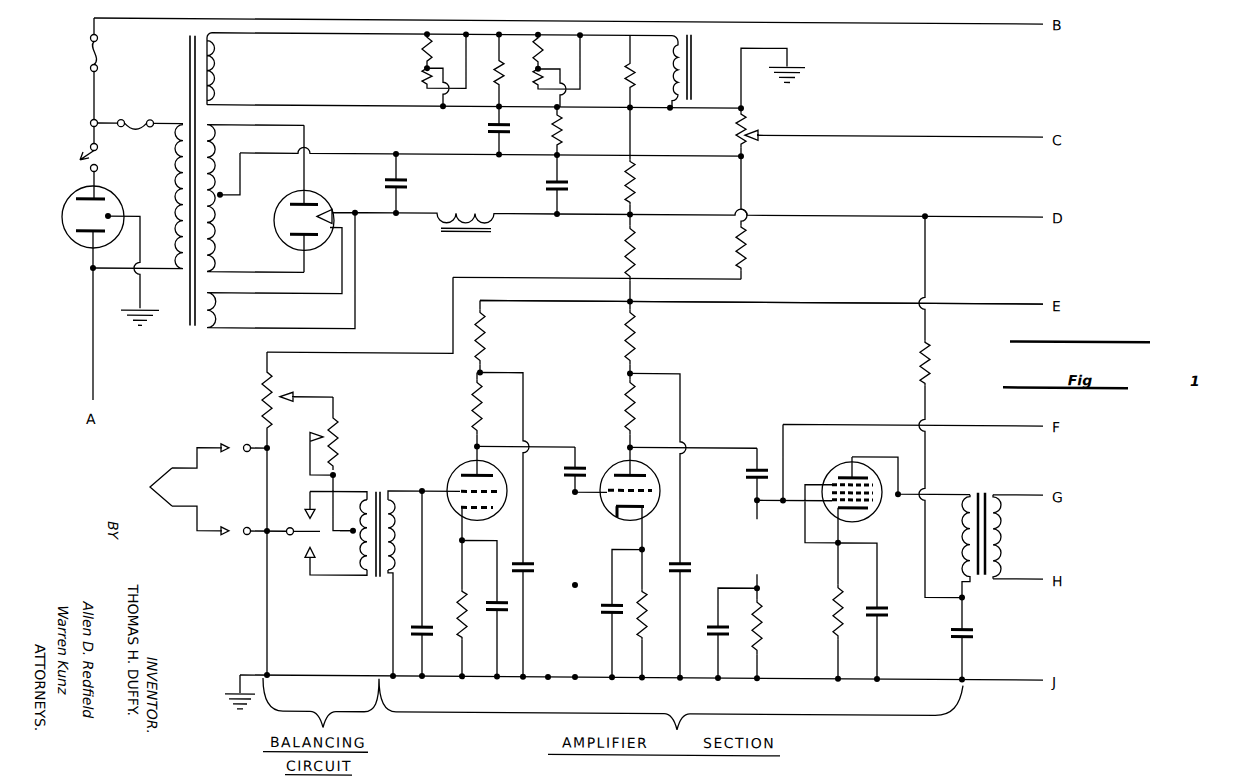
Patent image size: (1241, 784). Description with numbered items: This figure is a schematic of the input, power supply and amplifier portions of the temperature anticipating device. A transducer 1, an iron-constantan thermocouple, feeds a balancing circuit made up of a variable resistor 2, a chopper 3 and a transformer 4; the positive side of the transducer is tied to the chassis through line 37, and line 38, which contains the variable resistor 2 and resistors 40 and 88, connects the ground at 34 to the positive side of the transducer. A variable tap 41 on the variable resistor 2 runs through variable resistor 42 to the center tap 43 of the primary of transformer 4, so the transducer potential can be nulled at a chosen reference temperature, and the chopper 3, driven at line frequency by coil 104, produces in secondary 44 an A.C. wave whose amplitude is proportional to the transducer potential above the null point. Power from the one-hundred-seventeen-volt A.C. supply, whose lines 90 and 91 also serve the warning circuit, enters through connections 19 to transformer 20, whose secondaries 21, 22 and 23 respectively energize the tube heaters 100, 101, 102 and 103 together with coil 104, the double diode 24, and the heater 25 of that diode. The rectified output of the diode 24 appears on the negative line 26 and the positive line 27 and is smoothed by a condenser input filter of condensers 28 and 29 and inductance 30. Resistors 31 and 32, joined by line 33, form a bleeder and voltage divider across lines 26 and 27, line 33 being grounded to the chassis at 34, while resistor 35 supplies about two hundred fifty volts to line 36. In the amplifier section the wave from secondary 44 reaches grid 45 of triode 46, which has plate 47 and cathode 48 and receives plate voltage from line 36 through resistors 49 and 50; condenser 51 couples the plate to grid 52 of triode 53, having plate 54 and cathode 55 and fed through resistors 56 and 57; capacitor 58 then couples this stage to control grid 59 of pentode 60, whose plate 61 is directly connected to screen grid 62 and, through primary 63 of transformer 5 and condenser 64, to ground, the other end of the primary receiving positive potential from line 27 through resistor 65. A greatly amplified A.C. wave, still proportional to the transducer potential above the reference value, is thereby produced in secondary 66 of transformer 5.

The transducer 1 is at (163, 478).
The variable resistor 2 is at (260, 404).
The chopper 3 is at (300, 535).
The transformer 4 is at (378, 488).
The transformer 5 is at (983, 487).
The connections 19 is at (78, 236).
The transformer 20 is at (181, 121).
The secondary 21 is at (223, 55).
The secondary 22 is at (219, 239).
The secondary 23 is at (218, 312).
The double diode 24 is at (289, 195).
The heater 25 is at (324, 208).
The line 26 is at (358, 152).
The line 27 is at (522, 216).
The condenser 28 is at (406, 176).
The condenser 29 is at (547, 180).
The inductance 30 is at (464, 207).
The resistor 31 is at (638, 184).
The resistor 32 is at (565, 136).
The line 33 is at (589, 110).
The ground 34 is at (771, 56).
The resistor 35 is at (638, 252).
The line 36 is at (806, 298).
The line 37 is at (267, 624).
The line 38 is at (391, 351).
The fixed resistor 40 is at (748, 250).
The variable tap 41 is at (310, 395).
The variable resistor 42 is at (340, 446).
The center tap 43 is at (351, 534).
The secondary 44 is at (390, 574).
The grid 45 is at (459, 540).
The triode 46 is at (460, 463).
The plate 47 is at (495, 470).
The cathode 48 is at (482, 511).
The resistor 49 is at (487, 348).
The resistor 50 is at (470, 412).
The condenser 51 is at (579, 460).
The grid 52 is at (653, 487).
The triode 53 is at (648, 512).
The plate 54 is at (641, 468).
The cathode 55 is at (622, 515).
The resistor 56 is at (636, 347).
The resistor 57 is at (634, 422).
The capacitor 58 is at (748, 482).
The control grid 59 is at (836, 512).
The pentode 60 is at (838, 466).
The plate 61 is at (875, 474).
The screen grid 62 is at (873, 497).
The primary 63 is at (957, 528).
The condenser 64 is at (975, 634).
The resistor 65 is at (934, 358).
The secondary 66 is at (1005, 538).
The variable resistor 88 is at (748, 138).
The A.C. power line 90 is at (93, 373).
The A.C. power line 91 is at (90, 81).
The heater 100 is at (421, 84).
The heater 101 is at (493, 74).
The heater 102 is at (534, 88).
The heater 103 is at (615, 76).
The coil 104 is at (688, 97).